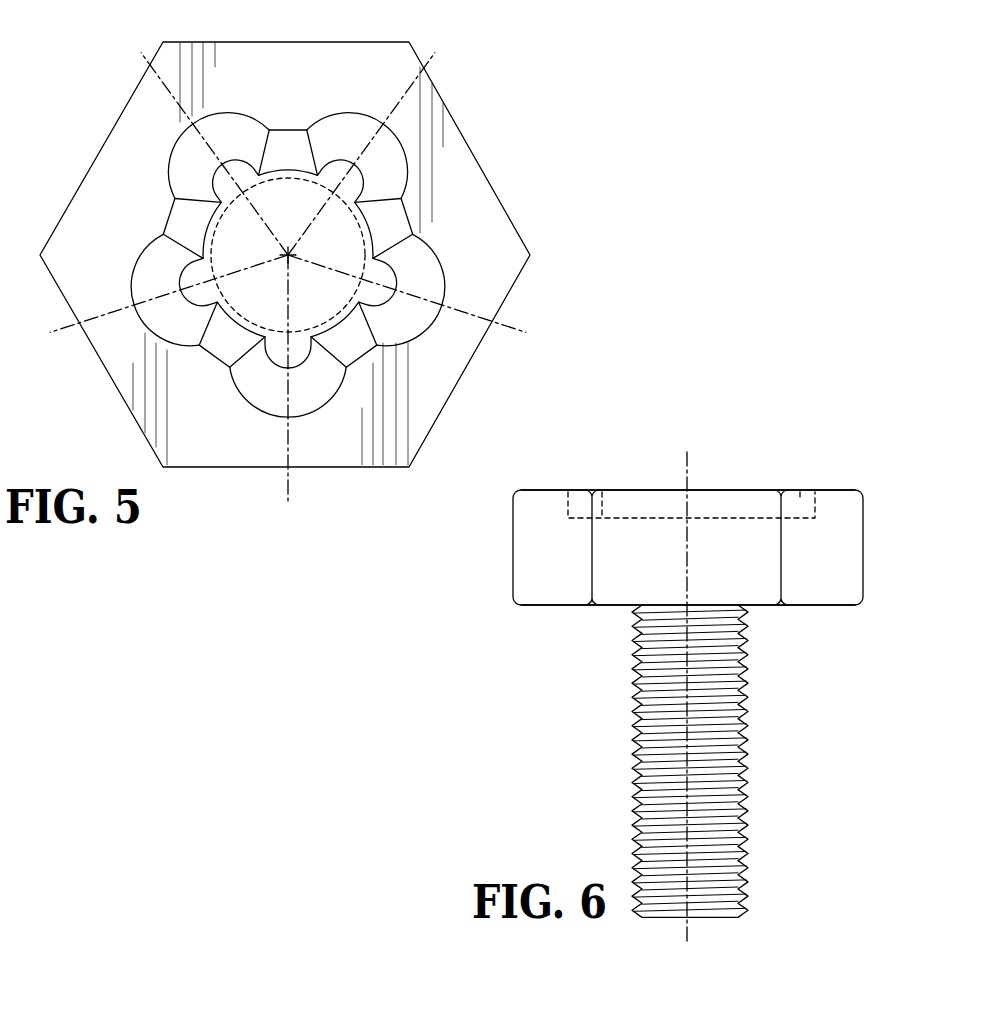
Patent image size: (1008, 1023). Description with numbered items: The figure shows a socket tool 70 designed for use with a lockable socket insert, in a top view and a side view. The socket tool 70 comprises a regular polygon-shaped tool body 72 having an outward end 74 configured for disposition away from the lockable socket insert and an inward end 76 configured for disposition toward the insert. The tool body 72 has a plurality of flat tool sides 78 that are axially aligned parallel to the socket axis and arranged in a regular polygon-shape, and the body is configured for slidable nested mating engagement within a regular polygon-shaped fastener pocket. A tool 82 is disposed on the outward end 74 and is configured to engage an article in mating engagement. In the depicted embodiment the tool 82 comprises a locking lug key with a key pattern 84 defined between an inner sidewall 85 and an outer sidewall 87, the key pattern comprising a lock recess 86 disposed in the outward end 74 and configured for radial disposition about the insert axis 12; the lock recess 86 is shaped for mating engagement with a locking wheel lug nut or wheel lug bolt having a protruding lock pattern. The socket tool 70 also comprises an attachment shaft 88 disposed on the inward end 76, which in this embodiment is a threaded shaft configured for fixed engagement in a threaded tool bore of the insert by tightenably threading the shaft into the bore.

In FIG. 5, the insert axis 12 is at (288, 255).
In FIG. 6, the insert axis 12 is at (688, 930).
In FIG. 5, the socket tool 70 is at (336, 299).
In FIG. 6, the socket tool 70 is at (717, 649).
In FIG. 5, the regular polygon-shaped tool body 72 is at (455, 113).
In FIG. 6, the regular polygon-shaped tool body 72 is at (717, 543).
In FIG. 5, the outward end 74 is at (493, 258).
In FIG. 6, the outward end 74 is at (742, 488).
In FIG. 6, the inward end 76 is at (813, 608).
In FIG. 6, the flat tool sides 78 is at (657, 537).
In FIG. 5, the tool 82 is at (134, 328).
In FIG. 5, the key pattern 84 is at (260, 410).
In FIG. 5, the inner sidewall 85 is at (382, 300).
In FIG. 6, the inner sidewall 85 is at (802, 503).
In FIG. 5, the lock recess 86 is at (423, 257).
In FIG. 6, the lock recess 86 is at (703, 503).
In FIG. 5, the outer sidewall 87 is at (403, 345).
In FIG. 6, the attachment shaft 88 is at (749, 783).